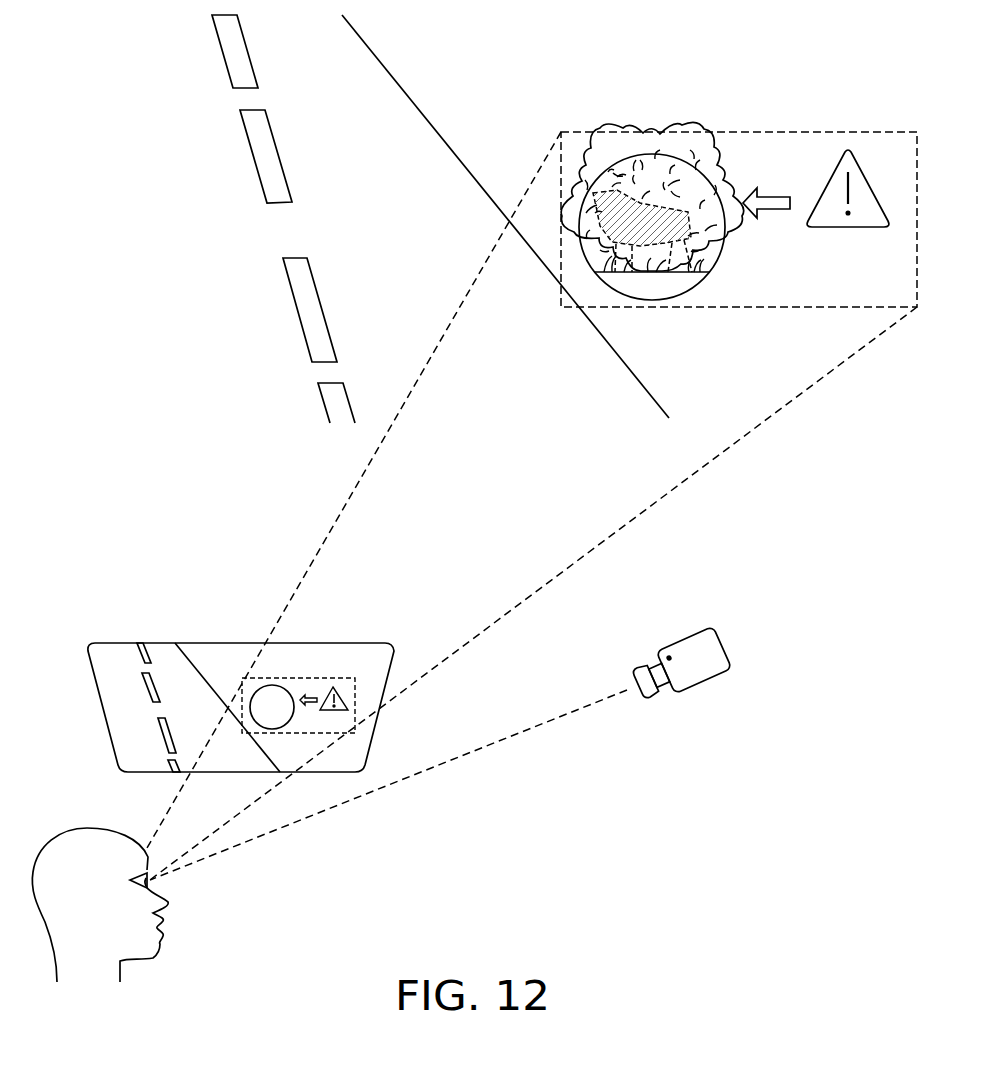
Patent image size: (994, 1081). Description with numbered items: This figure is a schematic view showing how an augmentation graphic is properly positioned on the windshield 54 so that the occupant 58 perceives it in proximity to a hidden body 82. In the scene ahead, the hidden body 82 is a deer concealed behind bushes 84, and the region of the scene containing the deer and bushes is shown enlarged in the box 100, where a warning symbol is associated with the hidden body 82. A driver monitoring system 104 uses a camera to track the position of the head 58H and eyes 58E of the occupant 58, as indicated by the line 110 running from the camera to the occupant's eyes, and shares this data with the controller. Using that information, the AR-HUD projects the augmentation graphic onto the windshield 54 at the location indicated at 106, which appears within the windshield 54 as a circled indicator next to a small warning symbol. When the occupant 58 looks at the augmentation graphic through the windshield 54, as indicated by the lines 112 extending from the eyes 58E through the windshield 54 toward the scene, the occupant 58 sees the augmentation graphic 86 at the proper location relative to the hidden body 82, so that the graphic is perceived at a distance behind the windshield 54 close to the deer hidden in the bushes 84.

The windshield 54 is at (229, 643).
The occupant 58 is at (130, 883).
The head 58H is at (98, 827).
The eyes 58E is at (162, 934).
The hidden body 82 is at (660, 272).
The bushes 84 is at (653, 118).
The augmentation graphic 86 is at (393, 209).
The highlighted region of interest 100 is at (758, 132).
The driver monitoring system 104 is at (707, 655).
The projection of the augmentation graphic onto the windshield 106 is at (270, 730).
The line 110 is at (540, 730).
The lines 112 is at (425, 363).